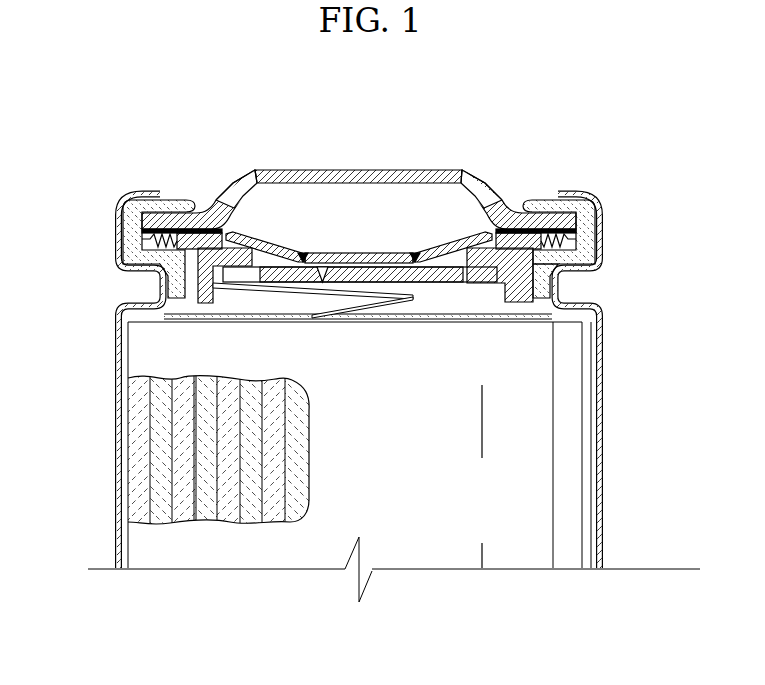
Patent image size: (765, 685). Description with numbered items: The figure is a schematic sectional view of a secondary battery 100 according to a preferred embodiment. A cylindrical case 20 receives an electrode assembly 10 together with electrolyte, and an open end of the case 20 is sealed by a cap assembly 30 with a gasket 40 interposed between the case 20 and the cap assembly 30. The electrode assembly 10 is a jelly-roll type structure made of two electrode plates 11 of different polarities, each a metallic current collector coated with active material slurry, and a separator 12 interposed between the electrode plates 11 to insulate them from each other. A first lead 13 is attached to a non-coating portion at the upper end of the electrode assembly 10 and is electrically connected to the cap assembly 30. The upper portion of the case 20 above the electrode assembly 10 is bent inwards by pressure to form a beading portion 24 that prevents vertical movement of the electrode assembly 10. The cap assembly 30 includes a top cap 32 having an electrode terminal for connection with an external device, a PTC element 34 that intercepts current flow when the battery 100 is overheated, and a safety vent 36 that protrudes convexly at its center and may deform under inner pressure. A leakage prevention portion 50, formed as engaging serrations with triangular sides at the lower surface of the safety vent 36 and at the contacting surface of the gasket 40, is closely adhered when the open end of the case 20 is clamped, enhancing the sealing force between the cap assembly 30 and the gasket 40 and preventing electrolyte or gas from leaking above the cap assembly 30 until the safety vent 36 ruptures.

The secondary battery 100 is at (540, 120).
The electrode assembly 10 is at (137, 401).
The electrode plates 11 is at (183, 467).
The separator 12 is at (160, 428).
The first lead 13 is at (413, 302).
The case 20 is at (609, 244).
The beading portion 24 is at (160, 286).
The cap assembly 30 is at (494, 169).
The top cap 32 is at (361, 170).
The PTC element 34 is at (215, 208).
The safety vent 36 is at (266, 238).
The gasket 40 is at (546, 189).
The leakage prevention portion 50 is at (535, 243).